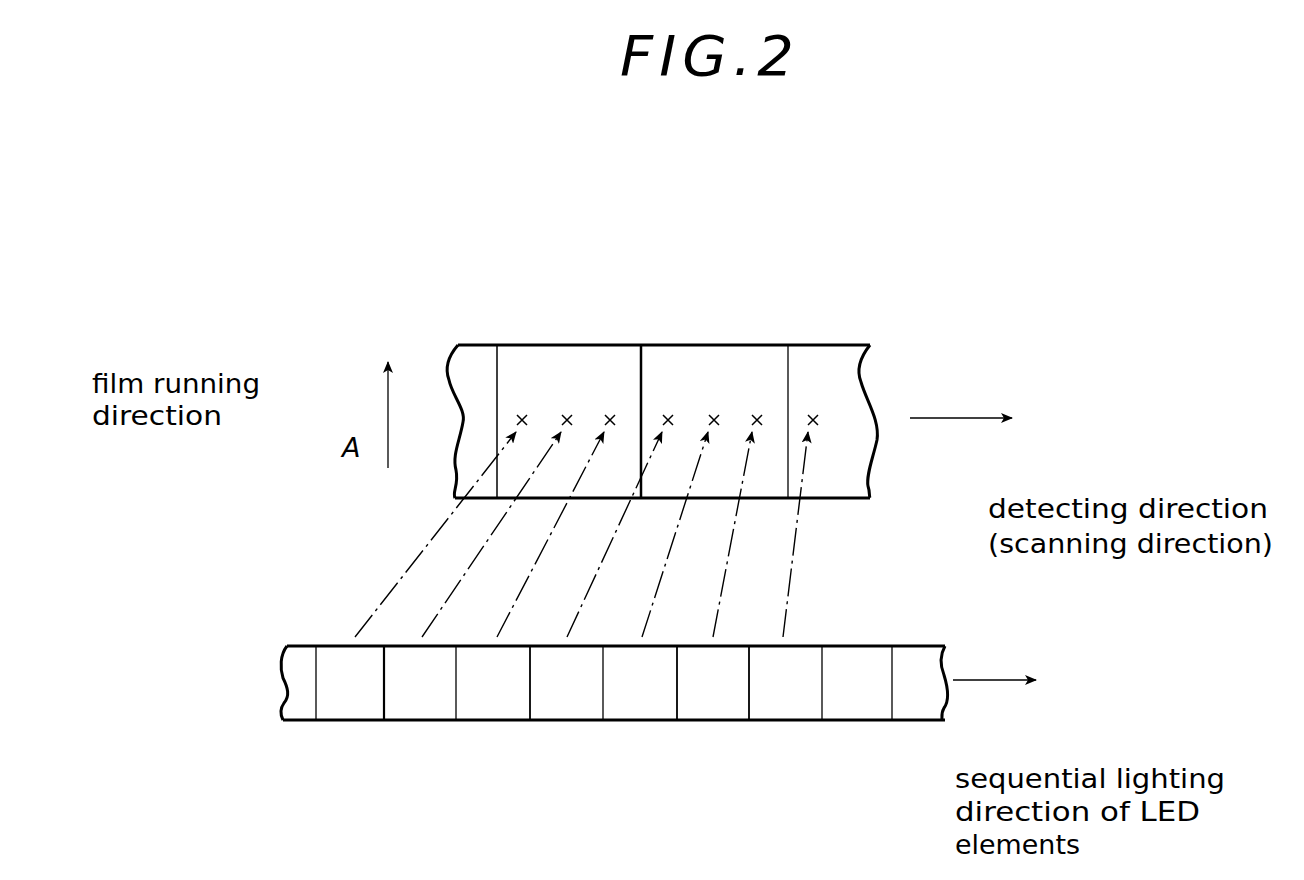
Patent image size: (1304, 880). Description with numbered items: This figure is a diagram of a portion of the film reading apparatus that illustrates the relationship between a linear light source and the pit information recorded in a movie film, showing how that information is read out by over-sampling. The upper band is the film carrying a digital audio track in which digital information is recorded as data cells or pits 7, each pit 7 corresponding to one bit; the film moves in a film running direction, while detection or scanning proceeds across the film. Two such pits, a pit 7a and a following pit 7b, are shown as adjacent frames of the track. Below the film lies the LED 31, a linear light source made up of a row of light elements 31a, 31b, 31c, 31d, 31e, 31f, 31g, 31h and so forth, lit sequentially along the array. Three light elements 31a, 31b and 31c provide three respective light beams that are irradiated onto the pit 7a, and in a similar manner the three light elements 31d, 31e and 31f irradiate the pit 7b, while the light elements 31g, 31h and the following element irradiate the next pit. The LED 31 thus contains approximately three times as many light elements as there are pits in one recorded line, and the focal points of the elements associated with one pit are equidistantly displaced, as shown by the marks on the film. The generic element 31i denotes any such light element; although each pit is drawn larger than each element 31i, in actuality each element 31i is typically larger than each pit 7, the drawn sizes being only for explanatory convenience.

The pit 7 is at (600, 270).
The pit 7a is at (540, 346).
The pit 7b is at (736, 355).
The LED 31 is at (278, 666).
The light element 31a is at (347, 722).
The light element 31b is at (423, 722).
The light element 31c is at (500, 722).
The light element 31d is at (578, 722).
The light element 31e is at (655, 722).
The light element 31f is at (727, 722).
The light element 31g is at (790, 722).
The light element 31h is at (862, 722).
The light element 31i is at (915, 722).